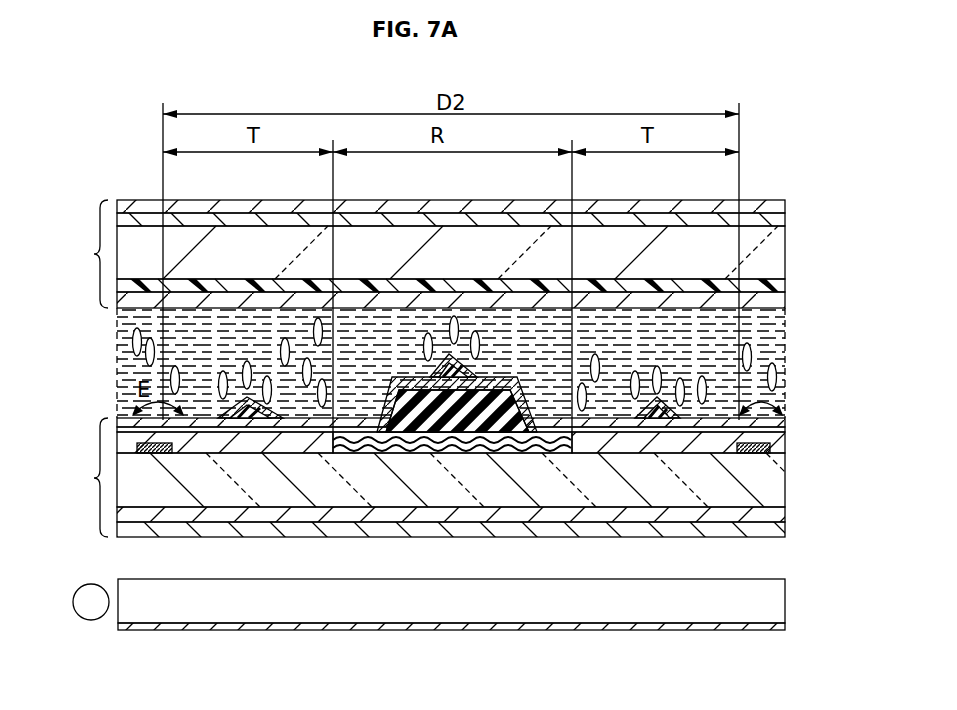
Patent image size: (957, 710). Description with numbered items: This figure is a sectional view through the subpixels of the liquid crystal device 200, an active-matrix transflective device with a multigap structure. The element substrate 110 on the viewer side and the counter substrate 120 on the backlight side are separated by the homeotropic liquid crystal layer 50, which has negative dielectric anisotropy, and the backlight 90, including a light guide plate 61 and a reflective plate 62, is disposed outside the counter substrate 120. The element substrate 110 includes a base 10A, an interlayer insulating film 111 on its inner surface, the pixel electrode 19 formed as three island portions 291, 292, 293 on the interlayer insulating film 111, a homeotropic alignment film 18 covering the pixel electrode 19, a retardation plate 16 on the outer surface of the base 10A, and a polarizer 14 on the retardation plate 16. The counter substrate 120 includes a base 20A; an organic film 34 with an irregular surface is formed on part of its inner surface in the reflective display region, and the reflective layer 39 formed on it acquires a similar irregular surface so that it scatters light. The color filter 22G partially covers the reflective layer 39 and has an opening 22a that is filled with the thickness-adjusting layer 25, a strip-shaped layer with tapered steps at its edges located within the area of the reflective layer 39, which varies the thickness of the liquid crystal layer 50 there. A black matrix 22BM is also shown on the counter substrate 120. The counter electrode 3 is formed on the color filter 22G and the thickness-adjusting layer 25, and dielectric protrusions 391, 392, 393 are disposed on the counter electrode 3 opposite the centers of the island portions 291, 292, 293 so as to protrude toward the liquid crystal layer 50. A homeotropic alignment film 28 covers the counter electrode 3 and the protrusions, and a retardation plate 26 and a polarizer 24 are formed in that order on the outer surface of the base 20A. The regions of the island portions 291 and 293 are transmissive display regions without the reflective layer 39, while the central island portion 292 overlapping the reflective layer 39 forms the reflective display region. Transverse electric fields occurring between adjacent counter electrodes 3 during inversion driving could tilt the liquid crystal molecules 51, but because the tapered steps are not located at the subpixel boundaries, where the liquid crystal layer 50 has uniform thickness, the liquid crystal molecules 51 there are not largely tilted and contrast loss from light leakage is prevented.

The liquid crystal device 200 is at (768, 150).
The element substrate 110 is at (79, 254).
The counter substrate 120 is at (79, 477).
The polarizer 14 is at (785, 203).
The retardation plate 16 is at (785, 222).
The base 10A is at (785, 246).
The interlayer insulating film 111 is at (785, 282).
The homeotropic alignment film 18 is at (482, 242).
The pixel electrode 19 is at (451, 238).
The island portion 291 is at (262, 300).
The central island portion 292 is at (472, 300).
The island portion 293 is at (668, 300).
The liquid crystal layer 50 is at (785, 330).
The liquid crystal molecules 51 is at (760, 354).
The homeotropic alignment film 28 is at (783, 418).
The counter electrode 3 is at (783, 427).
The color filter 22G is at (783, 436).
The black matrix 22BM is at (770, 447).
The reflective layer 39 is at (374, 452).
The opening 22a is at (484, 455).
The organic film 34 is at (527, 448).
The thickness-adjusting layer 25 is at (480, 436).
The dielectric protrusion 391 is at (255, 420).
The dielectric protrusion 392 is at (447, 355).
The dielectric protrusion 393 is at (655, 420).
The base 20A is at (777, 482).
The retardation plate 26 is at (777, 513).
The polarizer 24 is at (777, 530).
The backlight 90 is at (482, 610).
The light guide plate 61 is at (778, 602).
The reflective plate 62 is at (778, 626).